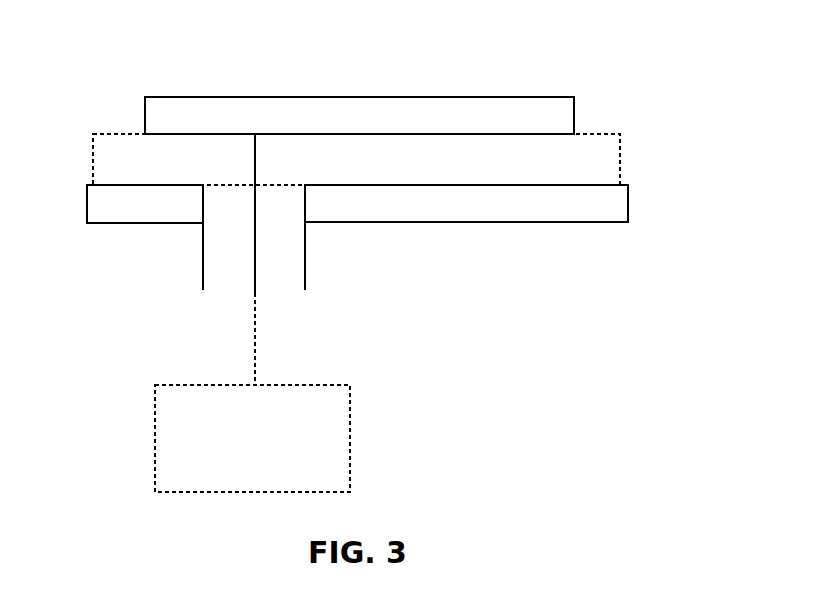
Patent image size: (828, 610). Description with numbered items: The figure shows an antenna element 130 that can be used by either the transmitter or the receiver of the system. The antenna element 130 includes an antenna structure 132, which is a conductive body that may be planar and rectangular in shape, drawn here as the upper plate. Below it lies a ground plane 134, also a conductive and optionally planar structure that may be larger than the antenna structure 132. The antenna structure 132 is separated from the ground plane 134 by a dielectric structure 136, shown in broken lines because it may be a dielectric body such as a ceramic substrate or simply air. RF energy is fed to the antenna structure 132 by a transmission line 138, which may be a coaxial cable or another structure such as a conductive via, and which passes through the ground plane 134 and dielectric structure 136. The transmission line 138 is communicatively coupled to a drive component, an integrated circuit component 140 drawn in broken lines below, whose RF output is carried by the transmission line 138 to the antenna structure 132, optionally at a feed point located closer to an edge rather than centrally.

The antenna element 130 is at (138, 38).
The antenna structure 132 is at (401, 106).
The ground plane 134 is at (530, 212).
The dielectric structure 136 is at (612, 157).
The transmission line 138 is at (255, 248).
The integrated circuit component 140 is at (155, 425).